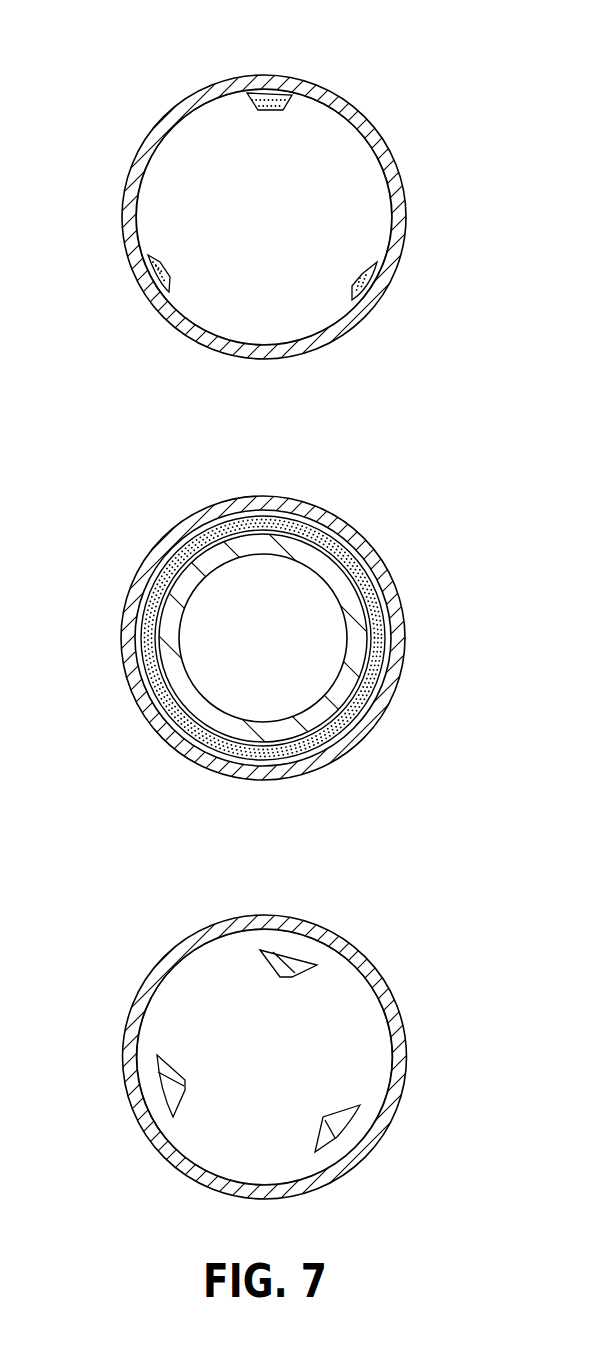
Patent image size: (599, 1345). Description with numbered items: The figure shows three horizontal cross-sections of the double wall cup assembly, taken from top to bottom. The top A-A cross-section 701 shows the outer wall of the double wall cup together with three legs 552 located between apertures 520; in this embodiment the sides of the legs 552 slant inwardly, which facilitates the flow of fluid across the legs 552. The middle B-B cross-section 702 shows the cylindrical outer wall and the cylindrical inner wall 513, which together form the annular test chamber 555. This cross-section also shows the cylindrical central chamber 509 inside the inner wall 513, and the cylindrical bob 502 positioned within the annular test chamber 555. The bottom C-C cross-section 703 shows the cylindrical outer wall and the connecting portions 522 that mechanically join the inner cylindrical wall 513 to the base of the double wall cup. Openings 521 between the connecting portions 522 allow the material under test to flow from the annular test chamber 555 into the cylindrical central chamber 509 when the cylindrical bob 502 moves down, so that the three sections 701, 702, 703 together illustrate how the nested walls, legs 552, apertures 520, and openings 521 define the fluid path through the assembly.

The top A-A cross-section 701 is at (128, 93).
The middle B-B cross-section 702 is at (128, 511).
The bottom C-C cross-section 703 is at (128, 931).
The apertures 520 is at (330, 138).
The legs 552 is at (277, 95).
The cylindrical central chamber 509 is at (270, 578).
The cylindrical inner wall 513 is at (342, 580).
The cylindrical bob 502 is at (378, 667).
The annular test chamber 555 is at (148, 653).
The openings 521 is at (337, 990).
The connecting portions 522 is at (291, 958).